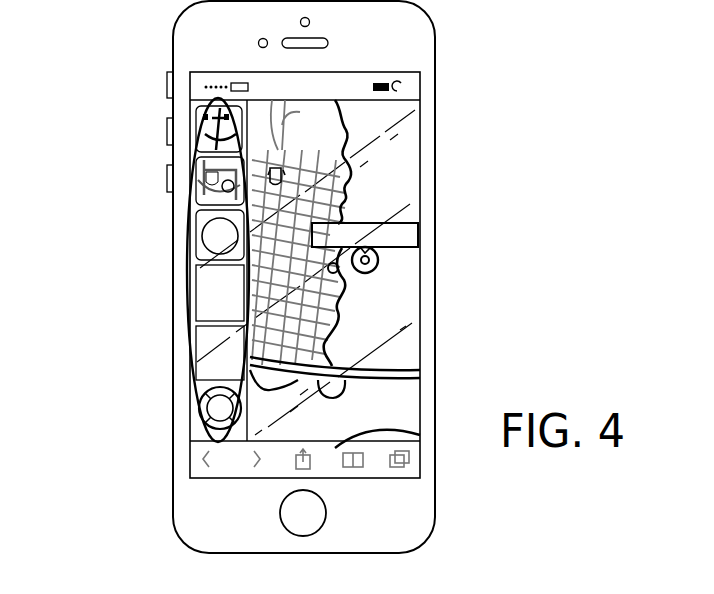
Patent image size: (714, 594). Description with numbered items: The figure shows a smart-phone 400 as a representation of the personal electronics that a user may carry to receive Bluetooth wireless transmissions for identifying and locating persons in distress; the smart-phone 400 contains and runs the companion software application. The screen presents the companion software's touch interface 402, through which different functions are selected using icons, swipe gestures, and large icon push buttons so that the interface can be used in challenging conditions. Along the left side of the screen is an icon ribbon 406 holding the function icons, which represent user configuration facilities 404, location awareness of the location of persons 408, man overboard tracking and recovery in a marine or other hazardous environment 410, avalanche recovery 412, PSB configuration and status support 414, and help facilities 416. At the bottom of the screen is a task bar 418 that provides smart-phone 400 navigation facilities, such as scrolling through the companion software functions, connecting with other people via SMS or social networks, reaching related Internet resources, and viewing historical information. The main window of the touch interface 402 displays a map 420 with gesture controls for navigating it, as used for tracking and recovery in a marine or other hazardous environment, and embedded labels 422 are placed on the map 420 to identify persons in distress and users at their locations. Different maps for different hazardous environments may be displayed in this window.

The smart-phone 400 is at (163, 530).
The touch interface 402 is at (298, 218).
The user configuration facilities 404 is at (197, 106).
The icon ribbon 406 is at (187, 133).
The location awareness of the location of person(s) 408 is at (200, 180).
The man overboard tracking and recovery 410 is at (200, 235).
The avalanche recovery 412 is at (193, 297).
The PSB configuration and status support 414 is at (188, 347).
The help facilities 416 is at (200, 414).
The task bar 418 is at (420, 435).
The map 420 is at (372, 207).
The embedded labels 422 is at (378, 262).